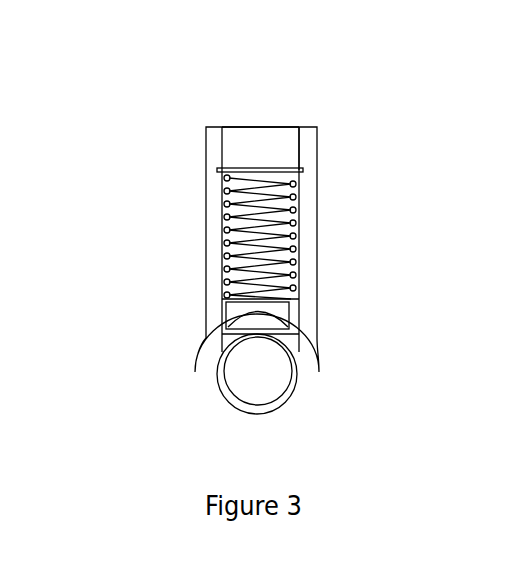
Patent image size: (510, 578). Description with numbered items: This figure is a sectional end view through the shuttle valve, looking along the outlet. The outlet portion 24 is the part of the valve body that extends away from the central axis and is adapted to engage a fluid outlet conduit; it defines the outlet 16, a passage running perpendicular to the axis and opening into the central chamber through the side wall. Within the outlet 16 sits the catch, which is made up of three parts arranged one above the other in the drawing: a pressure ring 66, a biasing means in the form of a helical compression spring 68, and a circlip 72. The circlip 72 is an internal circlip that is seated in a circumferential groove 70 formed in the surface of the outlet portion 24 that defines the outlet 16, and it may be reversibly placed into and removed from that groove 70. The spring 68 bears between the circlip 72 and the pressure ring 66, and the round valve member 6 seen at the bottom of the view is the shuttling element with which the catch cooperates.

The valve member 6 is at (268, 372).
The outlet 16 is at (257, 147).
The outlet portion 24 is at (205, 226).
The pressure ring 66 is at (293, 309).
The helical compression spring 68 is at (226, 195).
The groove 70 is at (318, 167).
The circlip 72 is at (240, 171).